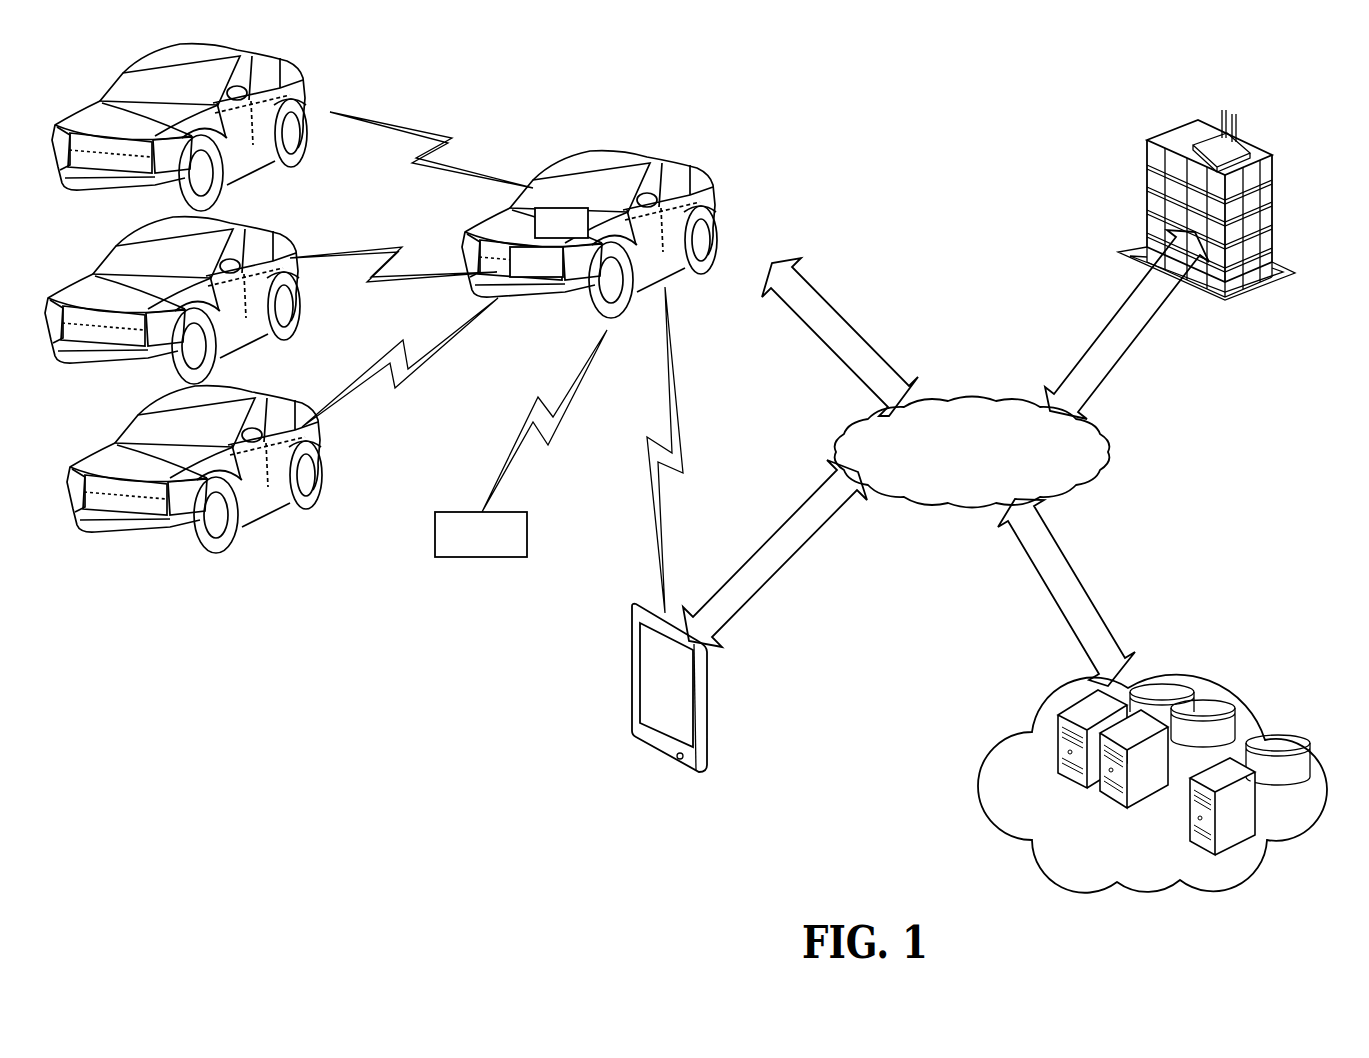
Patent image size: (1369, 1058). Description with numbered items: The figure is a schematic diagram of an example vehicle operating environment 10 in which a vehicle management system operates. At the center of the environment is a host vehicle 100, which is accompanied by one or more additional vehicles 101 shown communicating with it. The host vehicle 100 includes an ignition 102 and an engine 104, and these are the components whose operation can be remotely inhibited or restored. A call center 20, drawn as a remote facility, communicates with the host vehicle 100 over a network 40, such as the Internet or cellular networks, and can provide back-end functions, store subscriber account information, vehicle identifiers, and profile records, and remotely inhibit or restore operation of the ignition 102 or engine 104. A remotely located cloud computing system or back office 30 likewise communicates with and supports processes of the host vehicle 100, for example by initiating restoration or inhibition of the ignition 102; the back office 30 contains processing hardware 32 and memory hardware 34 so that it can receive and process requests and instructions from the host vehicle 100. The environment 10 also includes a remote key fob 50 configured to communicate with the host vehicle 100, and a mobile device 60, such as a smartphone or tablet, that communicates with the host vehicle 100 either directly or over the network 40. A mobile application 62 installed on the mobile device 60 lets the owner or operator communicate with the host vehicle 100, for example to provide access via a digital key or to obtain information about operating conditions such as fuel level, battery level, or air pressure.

The vehicle operating environment 10 is at (926, 175).
The call center 20 is at (1222, 308).
The back office 30 is at (975, 793).
The processing hardware 32 is at (1262, 808).
The memory hardware 34 is at (1310, 767).
The network 40 is at (986, 465).
The remote key fob 50 is at (455, 512).
The mobile device 60 is at (748, 660).
The mobile application 62 is at (688, 692).
The host vehicle 100 is at (765, 167).
The additional vehicles 101 is at (348, 84).
The ignition 102 is at (561, 223).
The engine 104 is at (536, 262).